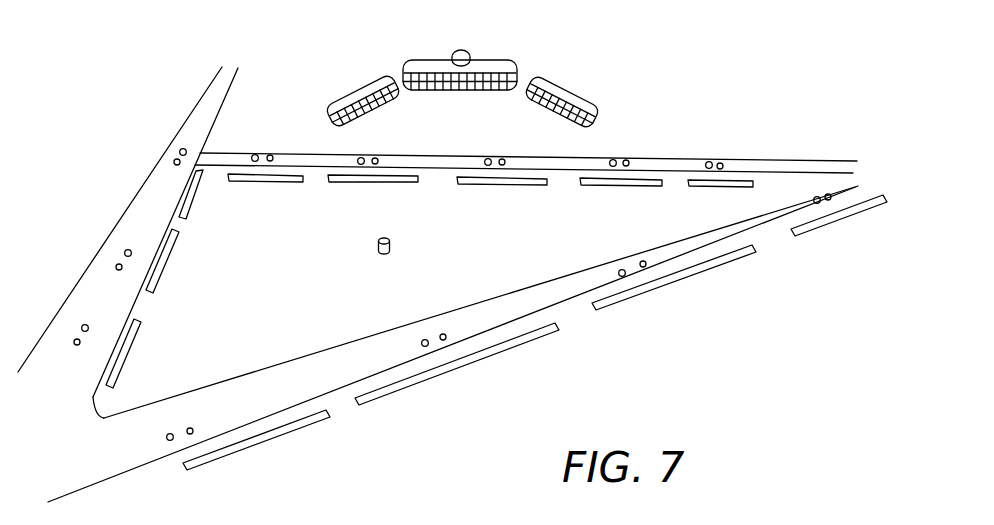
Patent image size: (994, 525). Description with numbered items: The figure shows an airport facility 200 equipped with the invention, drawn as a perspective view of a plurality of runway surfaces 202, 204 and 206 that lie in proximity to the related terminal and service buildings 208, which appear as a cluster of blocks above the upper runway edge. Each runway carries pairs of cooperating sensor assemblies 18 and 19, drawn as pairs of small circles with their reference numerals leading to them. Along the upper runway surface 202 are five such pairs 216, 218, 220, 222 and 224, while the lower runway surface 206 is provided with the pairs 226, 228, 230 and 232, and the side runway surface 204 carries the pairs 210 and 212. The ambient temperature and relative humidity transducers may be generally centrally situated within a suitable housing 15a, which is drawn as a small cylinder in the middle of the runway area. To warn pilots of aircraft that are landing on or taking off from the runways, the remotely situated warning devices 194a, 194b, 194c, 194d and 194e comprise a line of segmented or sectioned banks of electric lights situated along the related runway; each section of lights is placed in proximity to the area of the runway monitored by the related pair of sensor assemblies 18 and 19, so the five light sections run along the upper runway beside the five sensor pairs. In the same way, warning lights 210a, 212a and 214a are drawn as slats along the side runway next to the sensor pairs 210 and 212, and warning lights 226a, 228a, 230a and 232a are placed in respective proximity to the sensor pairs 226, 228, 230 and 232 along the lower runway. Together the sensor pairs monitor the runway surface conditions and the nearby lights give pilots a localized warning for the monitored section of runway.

The housing 15a is at (378, 248).
The sensor assembly 18 is at (183, 149).
The sensor assembly 19 is at (174, 162).
The warning device 194a is at (282, 181).
The warning device 194b is at (365, 182).
The warning device 194c is at (463, 185).
The warning device 194d is at (585, 186).
The warning device 194e is at (690, 188).
The airport facility 200 is at (855, 62).
The runway surface 202 is at (433, 163).
The runway surface 204 is at (166, 146).
The runway surface 206 is at (547, 295).
The terminal and service buildings 208 is at (547, 52).
The pair of cooperating sensor assemblies 210 is at (71, 324).
The warning light 210a is at (128, 352).
The pair of cooperating sensor assemblies 212 is at (107, 248).
The warning light 212a is at (165, 268).
The warning light 214a is at (185, 208).
The pair of cooperating sensor assemblies 216 is at (267, 150).
The pair of cooperating sensor assemblies 218 is at (375, 150).
The pair of cooperating sensor assemblies 220 is at (501, 153).
The pair of cooperating sensor assemblies 222 is at (631, 155).
The pair of cooperating sensor assemblies 224 is at (727, 155).
The pair of cooperating sensor assemblies 226 is at (183, 421).
The warning light 226a is at (278, 440).
The pair of cooperating sensor assemblies 228 is at (437, 349).
The warning light 228a is at (478, 362).
The pair of cooperating sensor assemblies 230 is at (639, 272).
The warning light 230a is at (712, 272).
The pair of cooperating sensor assemblies 232 is at (826, 211).
The warning light 232a is at (800, 237).